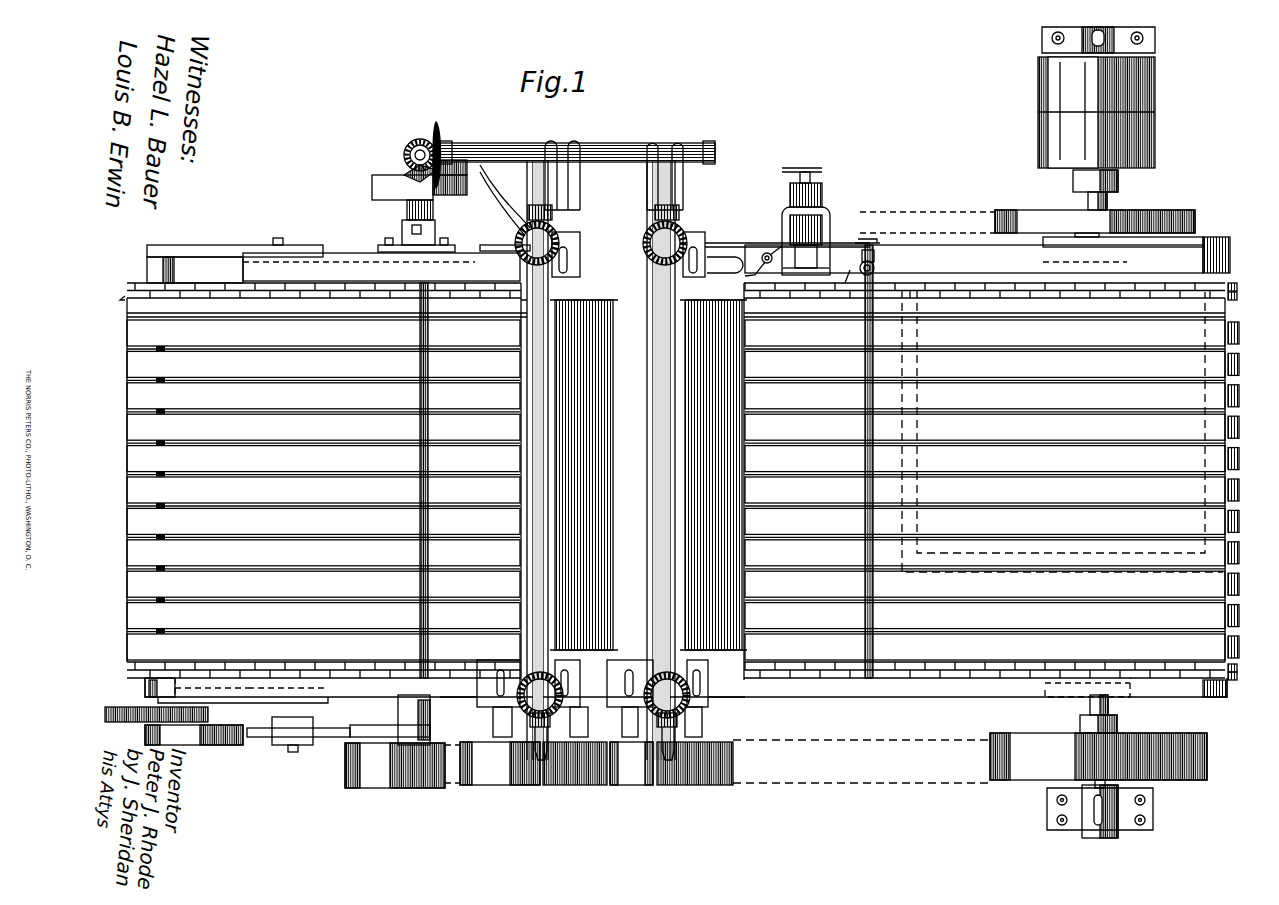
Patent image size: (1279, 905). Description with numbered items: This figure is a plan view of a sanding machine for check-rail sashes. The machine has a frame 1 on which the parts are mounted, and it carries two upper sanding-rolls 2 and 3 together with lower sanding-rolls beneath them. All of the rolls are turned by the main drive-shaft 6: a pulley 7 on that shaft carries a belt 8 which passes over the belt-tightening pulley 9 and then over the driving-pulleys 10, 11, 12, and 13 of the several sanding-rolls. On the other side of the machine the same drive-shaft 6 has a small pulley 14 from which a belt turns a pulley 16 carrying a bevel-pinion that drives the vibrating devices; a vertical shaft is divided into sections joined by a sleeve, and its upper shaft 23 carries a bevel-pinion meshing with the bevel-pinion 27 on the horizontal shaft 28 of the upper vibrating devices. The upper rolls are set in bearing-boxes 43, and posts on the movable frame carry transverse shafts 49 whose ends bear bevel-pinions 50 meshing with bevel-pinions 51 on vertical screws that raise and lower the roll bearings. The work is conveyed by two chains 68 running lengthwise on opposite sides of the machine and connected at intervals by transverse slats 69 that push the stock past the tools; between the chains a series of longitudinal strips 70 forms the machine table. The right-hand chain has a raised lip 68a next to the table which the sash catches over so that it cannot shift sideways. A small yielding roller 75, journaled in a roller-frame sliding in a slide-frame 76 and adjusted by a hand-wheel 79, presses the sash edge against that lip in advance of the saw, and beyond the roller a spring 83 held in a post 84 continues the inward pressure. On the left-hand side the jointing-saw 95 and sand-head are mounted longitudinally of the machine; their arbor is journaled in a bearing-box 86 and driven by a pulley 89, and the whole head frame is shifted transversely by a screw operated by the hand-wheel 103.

The frame 1 is at (936, 684).
The upper sanding-roll 2 is at (695, 500).
The upper sanding-roll 3 is at (598, 602).
The main drive-shaft 6 is at (1112, 840).
The pulley 7 is at (1098, 756).
The belt 8 is at (890, 772).
The belt-tightening pulley 9 is at (275, 741).
The driving-pulley 10 is at (565, 786).
The driving-pulley 11 is at (500, 763).
The driving-pulley 12 is at (690, 786).
The driving-pulley 13 is at (631, 763).
The small pulley 14 is at (1120, 184).
The pulley 16 is at (372, 188).
The upper shaft 23 is at (420, 140).
The bevel-pinion 27 is at (444, 130).
The horizontal shaft 28 is at (608, 152).
The bearing-box 43 is at (712, 702).
The transverse shaft 49 is at (670, 768).
The bevel-pinion 50 is at (657, 720).
The bevel-pinion 51 is at (685, 708).
The chain 68 is at (1232, 680).
The raised lip 68a is at (126, 298).
The transverse slat 69 is at (866, 608).
The longitudinal strip 70 is at (302, 352).
The roller 75 is at (876, 273).
The slide-frame 76 is at (1250, 535).
The hand-wheel 79 is at (873, 238).
The spring 83 is at (730, 275).
The post 84 is at (768, 252).
The bearing-box 86 is at (825, 207).
The pulley 89 is at (867, 213).
The saw 95 is at (847, 289).
The hand-wheel 103 is at (795, 166).